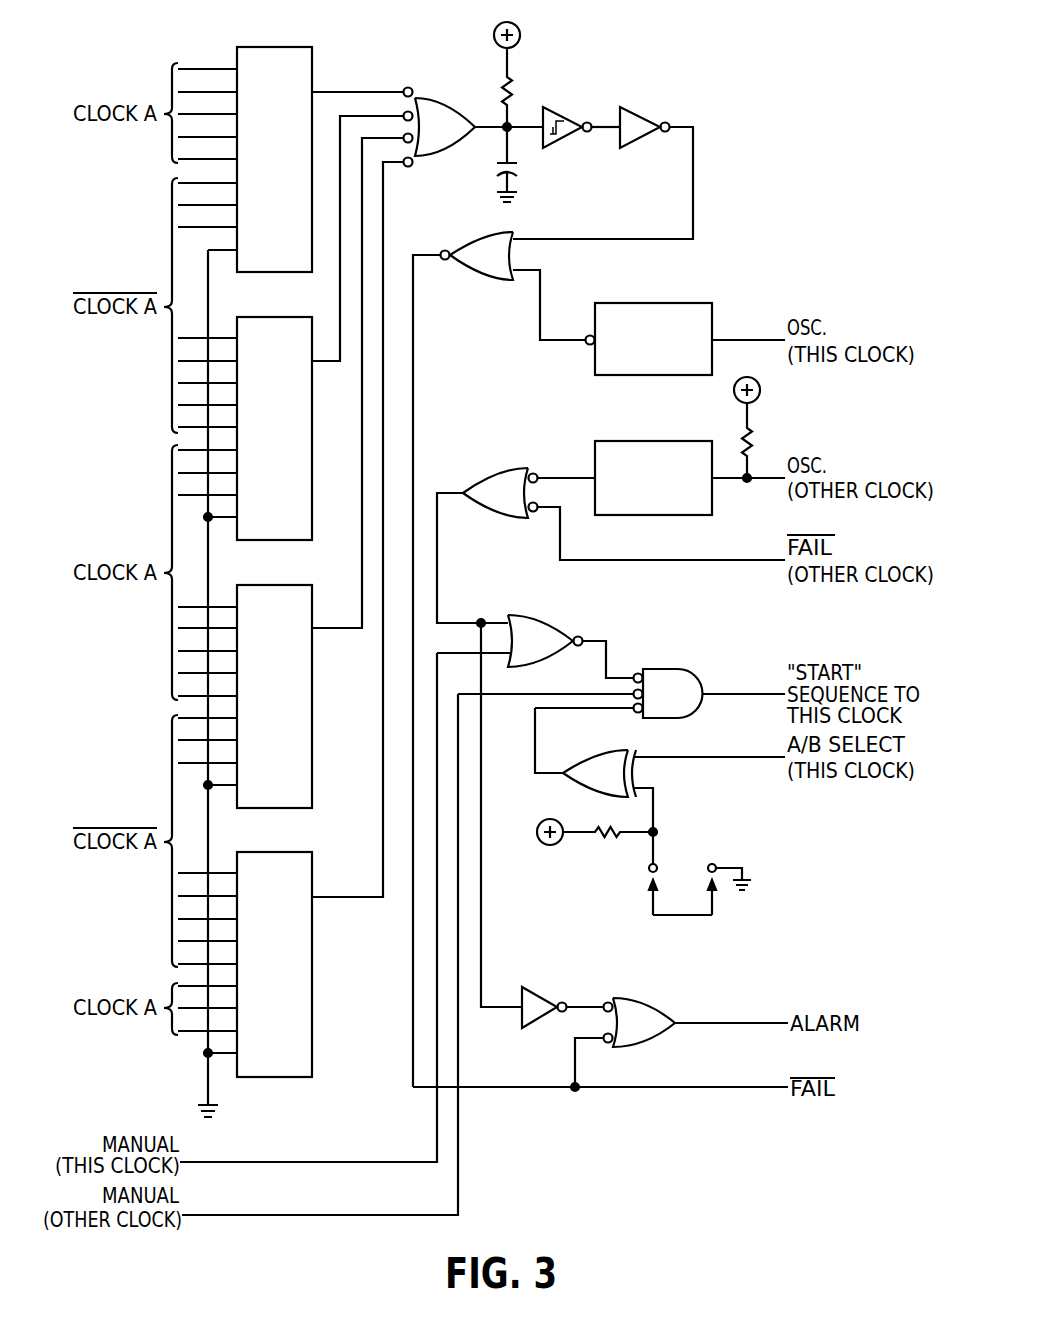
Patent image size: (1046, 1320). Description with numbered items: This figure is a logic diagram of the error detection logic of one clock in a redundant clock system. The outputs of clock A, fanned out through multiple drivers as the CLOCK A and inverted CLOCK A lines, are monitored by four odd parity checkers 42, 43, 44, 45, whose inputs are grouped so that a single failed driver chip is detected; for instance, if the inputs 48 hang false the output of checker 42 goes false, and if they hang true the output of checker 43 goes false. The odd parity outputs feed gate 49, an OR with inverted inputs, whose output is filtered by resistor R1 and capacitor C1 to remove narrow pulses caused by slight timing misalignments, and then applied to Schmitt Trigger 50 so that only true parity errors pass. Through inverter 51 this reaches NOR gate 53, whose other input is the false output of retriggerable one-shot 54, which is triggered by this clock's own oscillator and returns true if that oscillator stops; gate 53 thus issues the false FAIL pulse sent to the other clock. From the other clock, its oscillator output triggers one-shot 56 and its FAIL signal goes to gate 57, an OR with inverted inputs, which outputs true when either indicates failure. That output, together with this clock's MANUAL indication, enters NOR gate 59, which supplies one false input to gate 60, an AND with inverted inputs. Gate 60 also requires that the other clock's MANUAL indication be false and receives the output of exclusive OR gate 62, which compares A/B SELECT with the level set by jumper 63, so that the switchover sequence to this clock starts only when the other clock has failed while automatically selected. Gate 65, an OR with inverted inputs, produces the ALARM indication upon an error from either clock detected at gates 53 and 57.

The parity checker 42 is at (320, 137).
The parity checker 43 is at (320, 328).
The parity checker 44 is at (320, 473).
The parity checker 45 is at (320, 619).
The inputs 48 is at (174, 593).
The gate 49 is at (474, 110).
The resistor R1 is at (519, 74).
The capacitor C1 is at (524, 164).
The Schmitt Trigger 50 is at (581, 106).
The inverter 51 is at (603, 151).
The NOR gate 53 is at (504, 637).
The one-shot 54 is at (690, 315).
The one-shot 56 is at (690, 446).
The gate 57 is at (611, 525).
The NOR gate 59 is at (406, 866).
The gate 60 is at (483, 920).
The exclusive OR gate 62 is at (661, 778).
The jumper 63 is at (700, 903).
The gate 65 is at (600, 859).